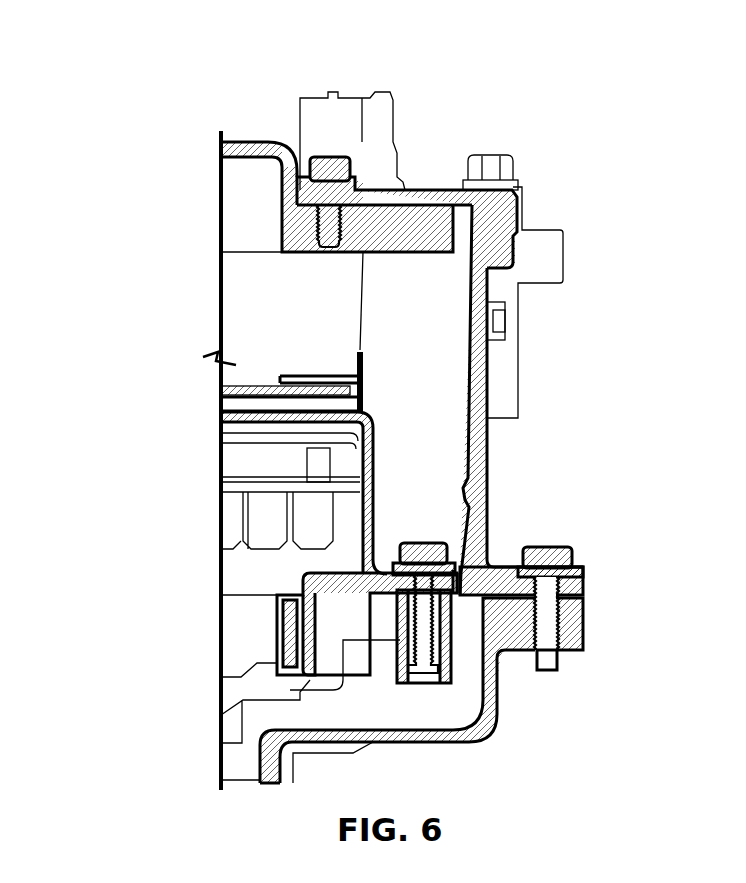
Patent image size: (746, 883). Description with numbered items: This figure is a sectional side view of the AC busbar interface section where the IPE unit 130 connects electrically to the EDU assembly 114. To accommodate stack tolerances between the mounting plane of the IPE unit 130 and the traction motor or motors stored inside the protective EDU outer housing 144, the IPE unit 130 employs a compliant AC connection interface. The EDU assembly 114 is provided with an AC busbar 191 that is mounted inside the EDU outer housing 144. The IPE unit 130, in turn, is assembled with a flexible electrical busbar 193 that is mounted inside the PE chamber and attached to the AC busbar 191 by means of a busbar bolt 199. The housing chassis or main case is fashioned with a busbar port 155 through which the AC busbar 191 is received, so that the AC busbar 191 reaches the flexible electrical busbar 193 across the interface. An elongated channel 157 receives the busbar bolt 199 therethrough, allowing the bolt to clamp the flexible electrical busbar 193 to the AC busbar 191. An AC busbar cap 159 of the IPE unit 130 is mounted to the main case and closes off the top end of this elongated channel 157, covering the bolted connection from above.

The EDU assembly 114 is at (120, 104).
The IPE unit 130 is at (542, 200).
The AC busbar cap 159 is at (430, 190).
The elongated channel 157 is at (403, 370).
The flexible electrical busbar 193 is at (378, 467).
The busbar bolt 199 is at (427, 543).
The busbar port 155 is at (463, 592).
The AC busbar 191 is at (443, 683).
The EDU outer housing 144 is at (582, 717).